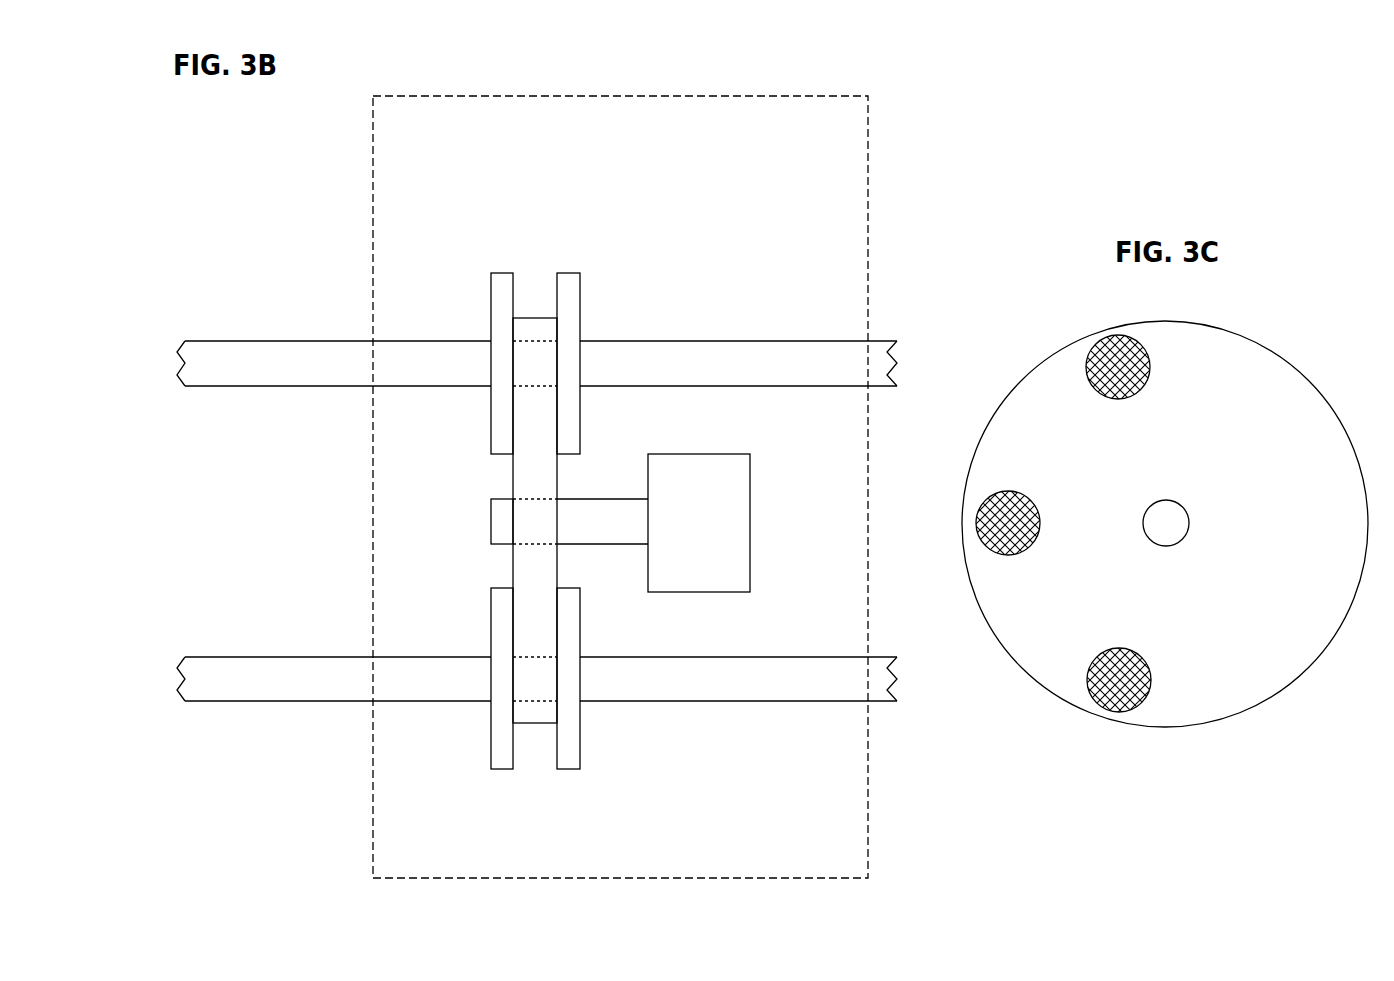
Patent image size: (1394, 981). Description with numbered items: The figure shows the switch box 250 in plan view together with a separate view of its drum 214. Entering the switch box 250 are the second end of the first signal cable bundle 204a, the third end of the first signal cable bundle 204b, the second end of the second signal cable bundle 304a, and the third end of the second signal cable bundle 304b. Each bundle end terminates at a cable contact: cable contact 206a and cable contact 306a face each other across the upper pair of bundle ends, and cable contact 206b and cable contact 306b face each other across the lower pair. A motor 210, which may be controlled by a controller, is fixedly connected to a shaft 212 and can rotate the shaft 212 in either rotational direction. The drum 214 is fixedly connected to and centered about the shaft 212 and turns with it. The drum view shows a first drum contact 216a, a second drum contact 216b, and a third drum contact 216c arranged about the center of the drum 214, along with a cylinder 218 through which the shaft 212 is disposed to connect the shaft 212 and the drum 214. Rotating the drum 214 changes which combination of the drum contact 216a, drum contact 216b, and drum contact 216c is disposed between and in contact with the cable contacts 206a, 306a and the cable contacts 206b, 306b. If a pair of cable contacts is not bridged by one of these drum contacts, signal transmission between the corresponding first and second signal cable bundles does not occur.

In FIG. 3B, the switch box 250 is at (868, 228).
In FIG. 3B, the second end of the first signal cable bundle 204a is at (277, 341).
In FIG. 3B, the third end of the first signal cable bundle 204b is at (324, 702).
In FIG. 3B, the second end of the second signal cable bundle 304a is at (787, 341).
In FIG. 3B, the third end of the second signal cable bundle 304b is at (795, 703).
In FIG. 3B, the cable contact 206a is at (495, 273).
In FIG. 3B, the cable contact 206b is at (500, 770).
In FIG. 3B, the cable contact 306a is at (577, 273).
In FIG. 3B, the cable contact 306b is at (572, 770).
In FIG. 3B, the shaft 212 is at (490, 532).
In FIG. 3B, the drum 214 is at (513, 560).
In FIG. 3C, the drum 214 is at (1288, 362).
In FIG. 3B, the motor 210 is at (750, 528).
In FIG. 3C, the first drum contact 216a is at (1118, 400).
In FIG. 3C, the second drum contact 216b is at (1016, 556).
In FIG. 3C, the third drum contact 216c is at (1118, 712).
In FIG. 3C, the cylinder 218 is at (1190, 523).